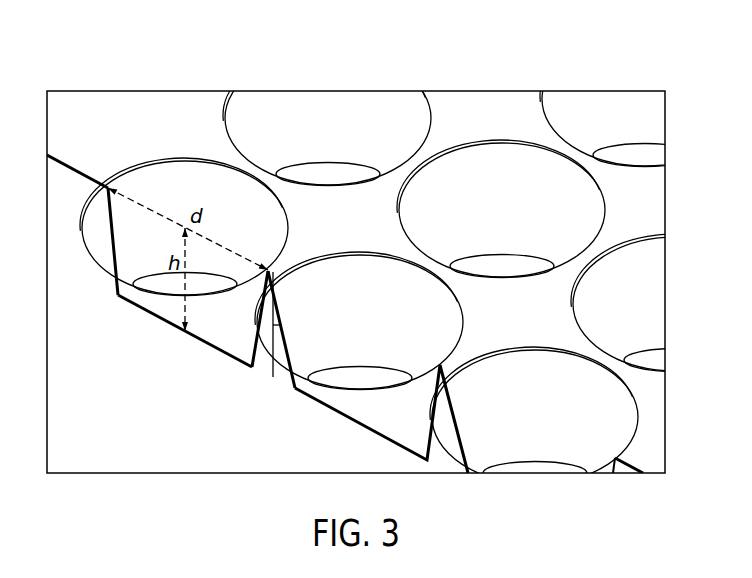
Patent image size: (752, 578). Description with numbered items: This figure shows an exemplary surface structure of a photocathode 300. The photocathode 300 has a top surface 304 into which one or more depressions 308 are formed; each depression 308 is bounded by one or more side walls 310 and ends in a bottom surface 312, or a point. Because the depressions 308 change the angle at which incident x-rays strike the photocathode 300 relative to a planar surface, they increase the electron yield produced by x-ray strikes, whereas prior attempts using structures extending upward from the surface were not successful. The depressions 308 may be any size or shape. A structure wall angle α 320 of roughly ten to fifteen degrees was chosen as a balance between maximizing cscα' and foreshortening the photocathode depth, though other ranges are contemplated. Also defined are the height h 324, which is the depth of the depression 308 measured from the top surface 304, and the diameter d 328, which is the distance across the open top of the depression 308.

The photocathode 300 is at (532, 46).
The top surface 304 is at (167, 108).
The depression 308 is at (324, 112).
The side wall 310 is at (383, 117).
The bottom surface 312 is at (325, 173).
The structure wall angle α 320 is at (283, 347).
The height h 324 is at (180, 308).
The diameter d 328 is at (148, 207).